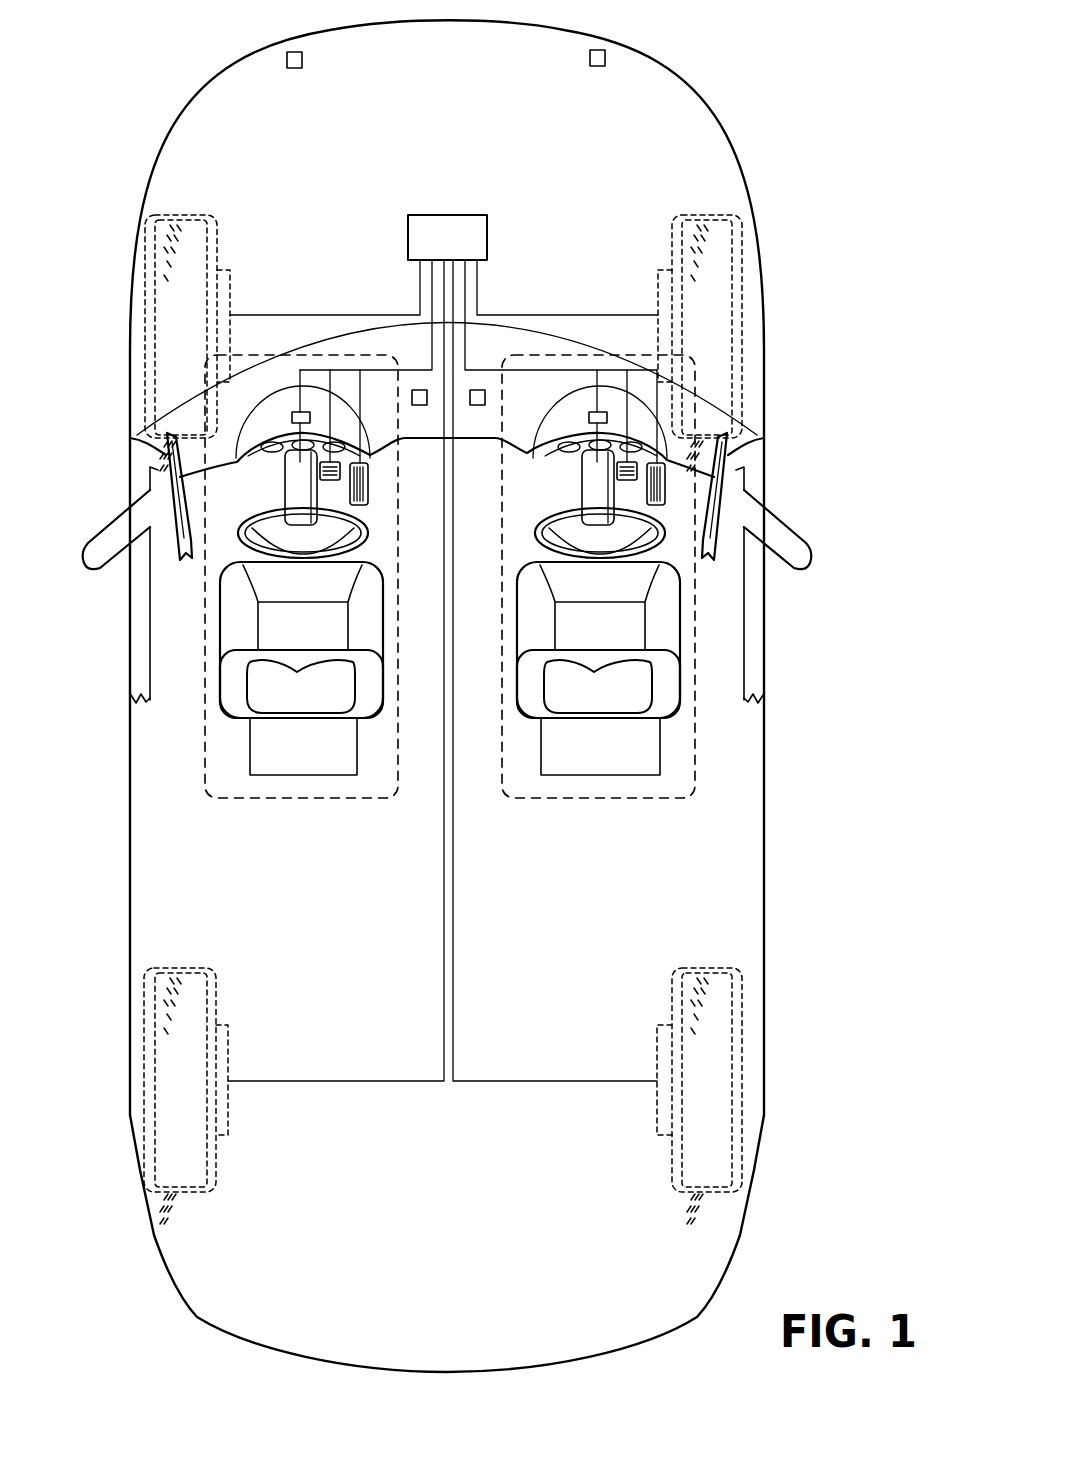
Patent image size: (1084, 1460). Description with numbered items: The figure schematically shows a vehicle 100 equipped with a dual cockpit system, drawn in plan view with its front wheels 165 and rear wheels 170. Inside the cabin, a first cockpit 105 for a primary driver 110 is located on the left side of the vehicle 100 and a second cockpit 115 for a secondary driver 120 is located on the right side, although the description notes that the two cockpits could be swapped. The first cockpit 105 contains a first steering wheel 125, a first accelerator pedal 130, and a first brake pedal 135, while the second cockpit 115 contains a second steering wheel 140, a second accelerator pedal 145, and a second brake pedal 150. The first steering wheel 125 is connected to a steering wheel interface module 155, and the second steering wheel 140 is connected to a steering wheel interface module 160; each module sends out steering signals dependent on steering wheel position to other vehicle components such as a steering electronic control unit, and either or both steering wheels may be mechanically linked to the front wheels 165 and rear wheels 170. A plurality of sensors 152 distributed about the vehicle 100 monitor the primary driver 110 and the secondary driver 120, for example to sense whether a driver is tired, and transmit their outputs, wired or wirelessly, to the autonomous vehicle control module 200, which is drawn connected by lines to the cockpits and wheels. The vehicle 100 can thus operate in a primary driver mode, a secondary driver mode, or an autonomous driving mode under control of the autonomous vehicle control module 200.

The vehicle 100 is at (790, 124).
The first cockpit 105 is at (328, 798).
The primary driver 110 is at (277, 777).
The second cockpit 115 is at (625, 798).
The secondary driver 120 is at (574, 777).
The first steering wheel 125 is at (258, 560).
The first accelerator pedal 130 is at (350, 495).
The first brake pedal 135 is at (320, 470).
The second steering wheel 140 is at (555, 560).
The second accelerator pedal 145 is at (647, 495).
The second brake pedal 150 is at (617, 470).
The plurality of sensors 152 is at (293, 52).
The steering wheel interface module 155 is at (294, 411).
The steering wheel interface module 160 is at (594, 411).
The front wheels 165 is at (147, 272).
The rear wheels 170 is at (143, 1020).
The autonomous vehicle control module 200 is at (453, 214).